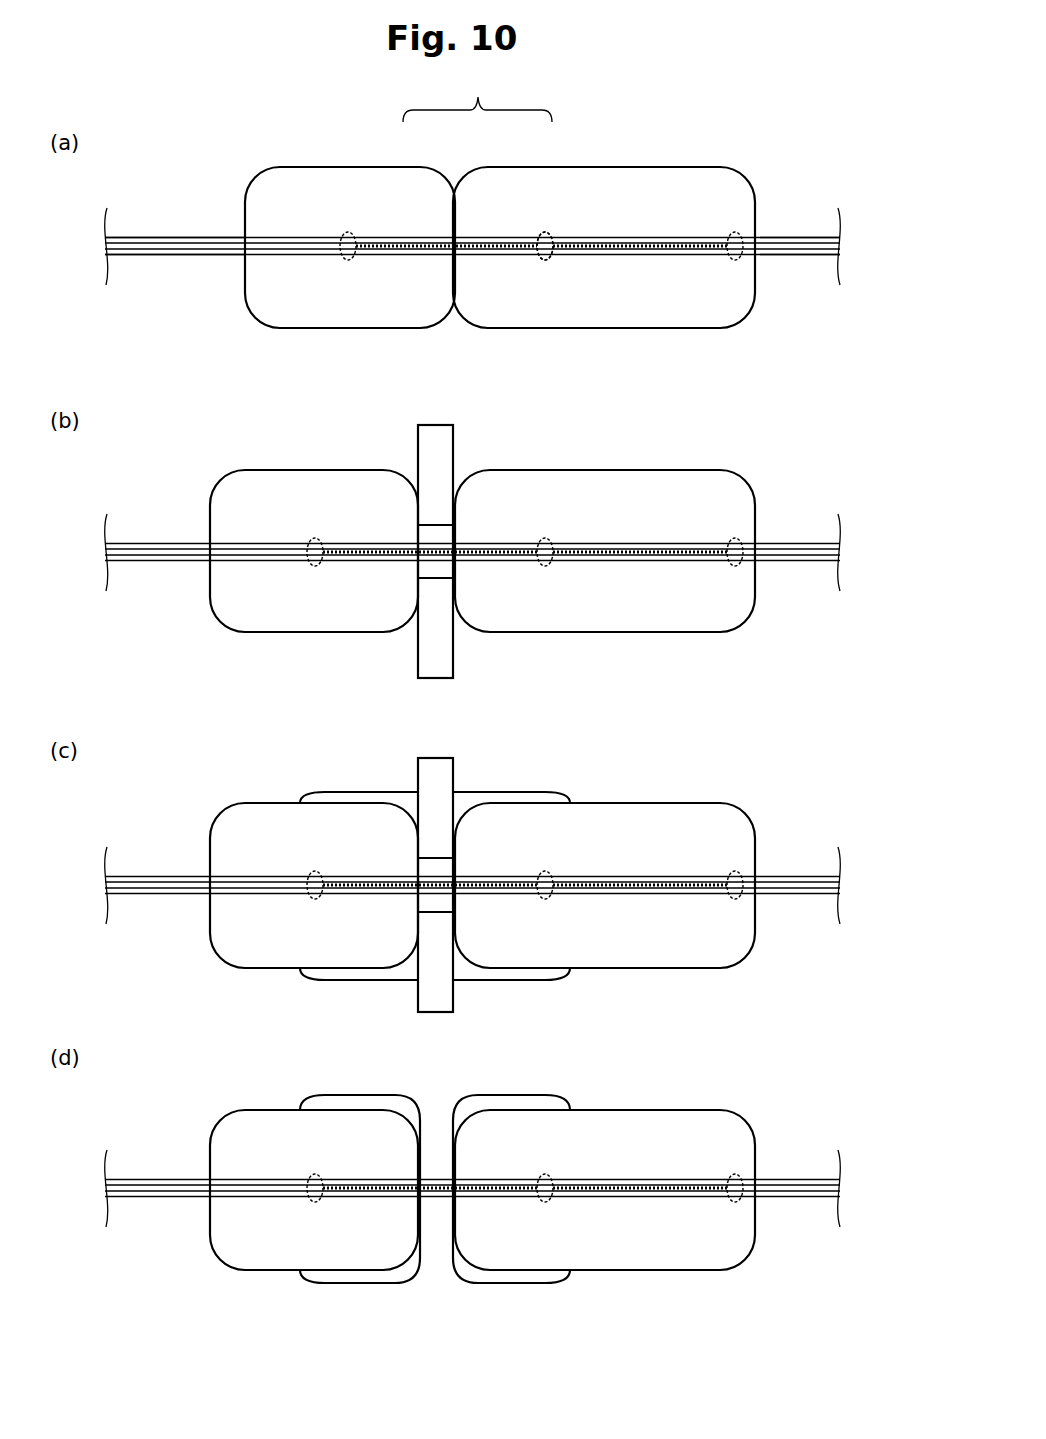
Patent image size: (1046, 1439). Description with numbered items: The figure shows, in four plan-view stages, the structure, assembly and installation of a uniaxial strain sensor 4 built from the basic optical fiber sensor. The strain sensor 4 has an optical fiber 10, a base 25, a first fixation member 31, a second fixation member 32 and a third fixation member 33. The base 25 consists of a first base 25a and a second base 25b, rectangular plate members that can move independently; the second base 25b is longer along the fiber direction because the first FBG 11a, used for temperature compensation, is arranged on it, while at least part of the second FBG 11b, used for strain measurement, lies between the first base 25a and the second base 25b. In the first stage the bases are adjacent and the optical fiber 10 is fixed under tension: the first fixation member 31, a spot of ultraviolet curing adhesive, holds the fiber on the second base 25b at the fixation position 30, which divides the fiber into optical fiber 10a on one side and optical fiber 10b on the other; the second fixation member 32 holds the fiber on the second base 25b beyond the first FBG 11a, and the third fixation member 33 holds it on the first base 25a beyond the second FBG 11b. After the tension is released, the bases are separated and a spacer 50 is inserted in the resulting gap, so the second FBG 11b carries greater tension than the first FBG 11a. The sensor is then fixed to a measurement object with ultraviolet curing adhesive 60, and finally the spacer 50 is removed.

The strain sensor 4 is at (812, 438).
The optical fiber 10 is at (805, 231).
The optical fiber (one side of fixation position) 10a is at (818, 258).
The optical fiber (other side of fixation position) 10b is at (163, 258).
The first FBG 11a is at (650, 258).
The second FBG 11b is at (425, 258).
The base 25 is at (477, 96).
The first base 25a is at (410, 167).
The second base 25b is at (493, 167).
The fixation position 30 is at (550, 272).
The first fixation member 31 is at (546, 231).
The second fixation member 32 is at (736, 231).
The third fixation member 33 is at (347, 231).
The spacer 50 is at (453, 437).
The ultraviolet curing adhesive 60 is at (335, 792).